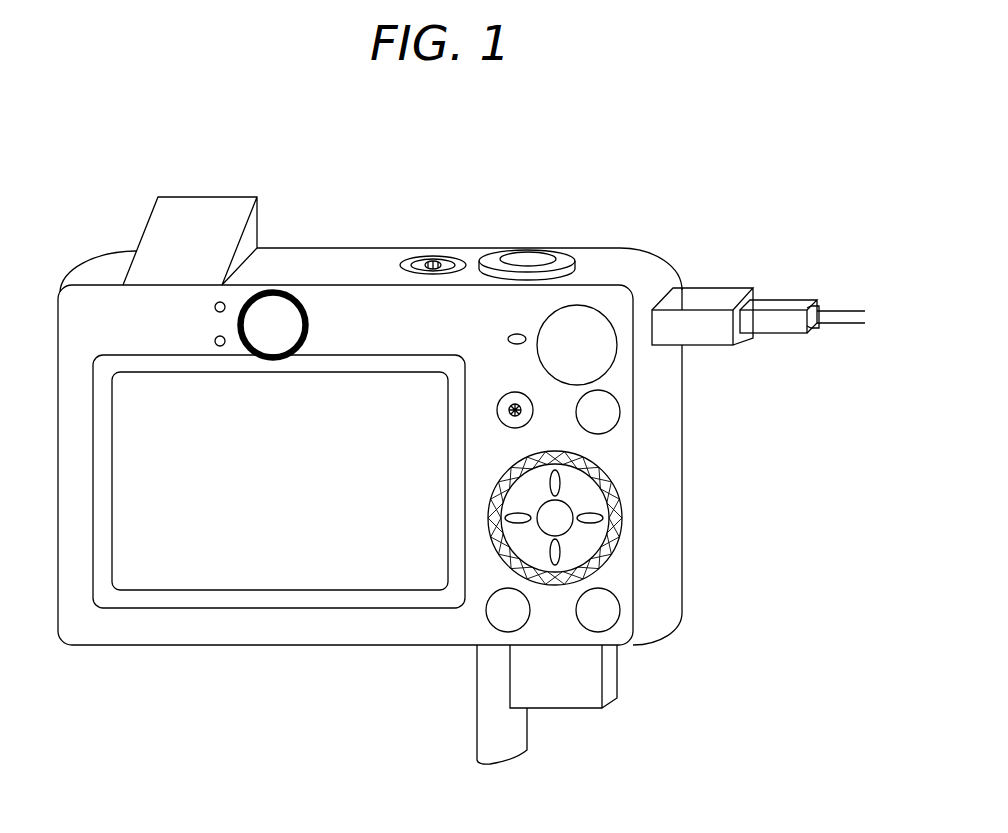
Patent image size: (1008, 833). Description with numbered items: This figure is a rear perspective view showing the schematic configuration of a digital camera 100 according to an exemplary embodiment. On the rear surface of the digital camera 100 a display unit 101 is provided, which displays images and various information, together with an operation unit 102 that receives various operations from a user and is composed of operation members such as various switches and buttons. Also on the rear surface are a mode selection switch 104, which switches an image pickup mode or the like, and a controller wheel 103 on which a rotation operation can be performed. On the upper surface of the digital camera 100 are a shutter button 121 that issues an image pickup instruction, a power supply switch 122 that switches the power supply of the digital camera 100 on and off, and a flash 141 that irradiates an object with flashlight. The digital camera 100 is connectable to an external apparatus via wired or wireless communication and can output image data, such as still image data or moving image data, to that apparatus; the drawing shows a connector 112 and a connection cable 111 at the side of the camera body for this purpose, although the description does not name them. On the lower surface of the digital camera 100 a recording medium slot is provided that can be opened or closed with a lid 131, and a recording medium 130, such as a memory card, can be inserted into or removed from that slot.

The digital camera 100 is at (182, 695).
The display unit 101 is at (293, 575).
The operation unit 102 is at (527, 275).
The controller wheel 103 is at (500, 558).
The mode selection switch 104 is at (607, 342).
The connection cable 111 is at (783, 307).
The connector 112 is at (715, 298).
The shutter button 121 is at (530, 250).
The power supply switch 122 is at (430, 258).
The recording medium 130 is at (590, 672).
The lid 131 is at (503, 735).
The flash 141 is at (192, 210).